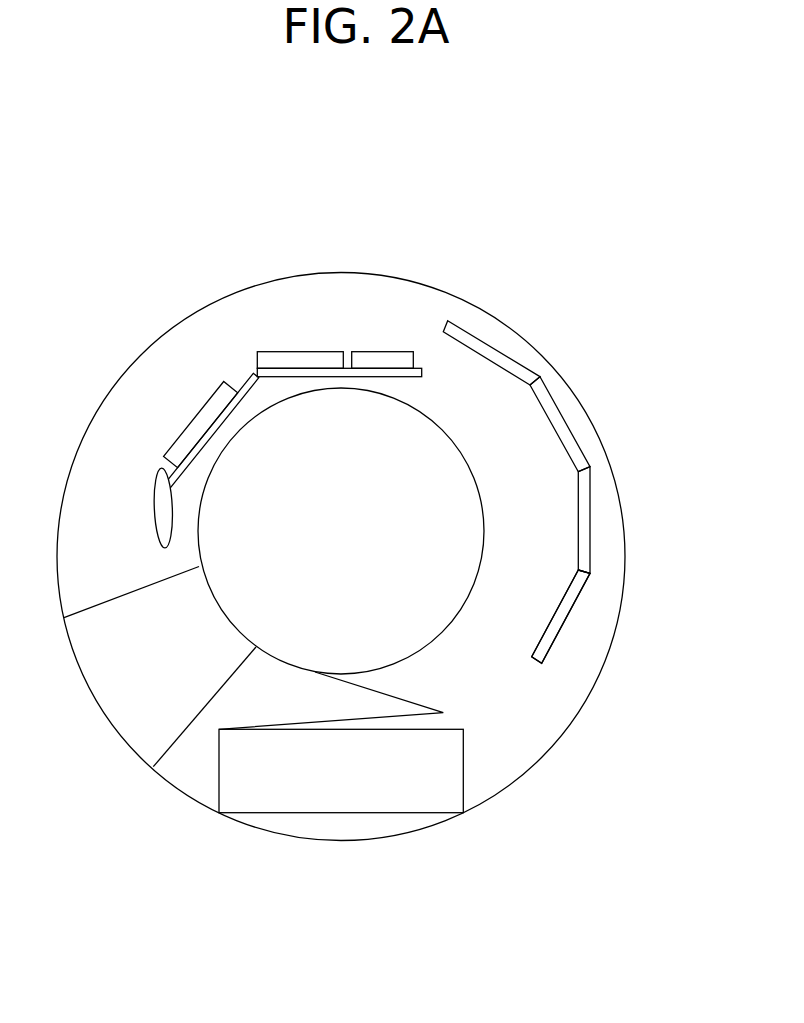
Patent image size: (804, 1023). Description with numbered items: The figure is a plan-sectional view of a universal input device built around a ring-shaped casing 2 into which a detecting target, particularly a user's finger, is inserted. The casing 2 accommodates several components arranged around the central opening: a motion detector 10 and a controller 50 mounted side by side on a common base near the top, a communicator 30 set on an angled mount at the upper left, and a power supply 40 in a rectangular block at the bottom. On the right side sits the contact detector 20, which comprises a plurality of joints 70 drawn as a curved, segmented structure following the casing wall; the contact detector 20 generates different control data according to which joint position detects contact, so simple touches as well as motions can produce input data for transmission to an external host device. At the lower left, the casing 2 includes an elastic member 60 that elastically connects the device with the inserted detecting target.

The casing 2 is at (538, 753).
The motion detector 10 is at (387, 357).
The contact detector 20 is at (528, 368).
The communicator 30 is at (182, 428).
The power supply 40 is at (440, 813).
The controller 50 is at (295, 357).
The elastic member 60 is at (120, 712).
The joints 70 is at (604, 582).